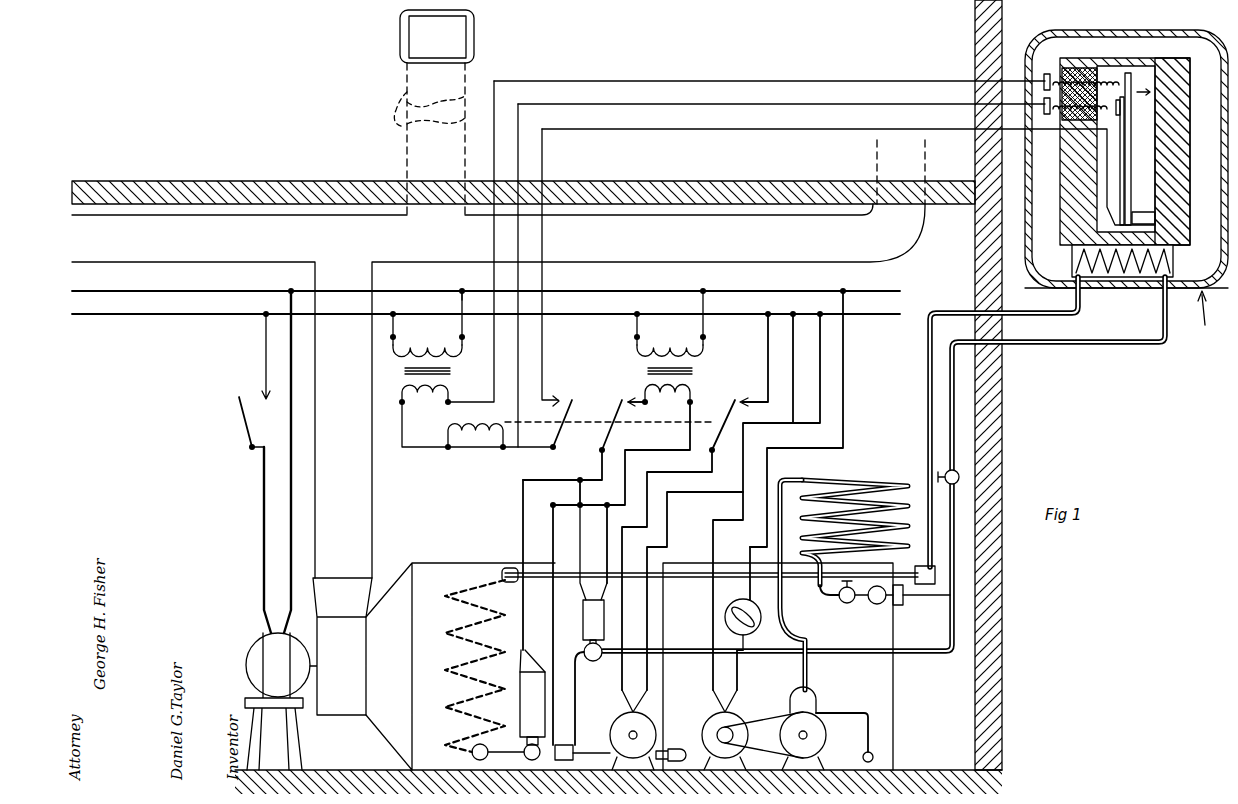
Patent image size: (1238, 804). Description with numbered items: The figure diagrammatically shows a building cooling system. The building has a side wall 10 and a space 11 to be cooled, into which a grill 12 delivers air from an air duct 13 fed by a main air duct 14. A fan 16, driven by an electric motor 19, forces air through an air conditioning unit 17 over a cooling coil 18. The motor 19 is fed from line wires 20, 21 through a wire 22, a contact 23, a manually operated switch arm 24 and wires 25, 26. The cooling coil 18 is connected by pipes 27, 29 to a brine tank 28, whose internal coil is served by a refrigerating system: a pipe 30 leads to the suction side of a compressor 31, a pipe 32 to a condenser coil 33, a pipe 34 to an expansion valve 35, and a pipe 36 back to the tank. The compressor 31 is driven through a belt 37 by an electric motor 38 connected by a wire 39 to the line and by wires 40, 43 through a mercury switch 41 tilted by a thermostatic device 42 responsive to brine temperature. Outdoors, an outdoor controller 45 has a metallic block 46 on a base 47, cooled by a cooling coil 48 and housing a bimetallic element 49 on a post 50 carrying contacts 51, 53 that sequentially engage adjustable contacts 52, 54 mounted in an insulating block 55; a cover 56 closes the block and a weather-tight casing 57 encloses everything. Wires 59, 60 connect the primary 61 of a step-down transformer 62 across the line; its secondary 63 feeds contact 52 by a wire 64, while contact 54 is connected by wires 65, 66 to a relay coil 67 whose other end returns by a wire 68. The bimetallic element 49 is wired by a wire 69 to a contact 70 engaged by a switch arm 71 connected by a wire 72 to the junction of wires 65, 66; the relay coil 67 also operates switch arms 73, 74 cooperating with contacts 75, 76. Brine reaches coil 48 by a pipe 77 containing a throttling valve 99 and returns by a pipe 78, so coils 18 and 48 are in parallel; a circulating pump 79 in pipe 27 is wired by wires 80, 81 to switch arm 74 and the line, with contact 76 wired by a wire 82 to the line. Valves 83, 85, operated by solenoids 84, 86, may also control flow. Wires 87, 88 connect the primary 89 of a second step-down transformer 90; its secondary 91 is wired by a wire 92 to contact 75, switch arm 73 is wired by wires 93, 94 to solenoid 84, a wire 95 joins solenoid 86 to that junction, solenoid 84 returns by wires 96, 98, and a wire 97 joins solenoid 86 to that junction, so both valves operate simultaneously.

The side wall 10 is at (990, 426).
The space to be cooled 11 is at (297, 115).
The grill 12 is at (473, 38).
The air duct 13 is at (406, 126).
The main air duct 14 is at (400, 262).
The fan 16 is at (340, 703).
The air conditioning unit 17 is at (418, 567).
The cooling coil 18 is at (468, 578).
The electric motor 19 is at (252, 655).
The line wire 20 is at (150, 314).
The line wire 21 is at (150, 291).
The wire 22 is at (264, 372).
The contact 23 is at (264, 400).
The switch arm 24 is at (242, 418).
The wire 25 is at (262, 606).
The wire 26 is at (292, 600).
The pipe 27 is at (572, 745).
The brine tank 28 is at (895, 700).
The pipe 29 is at (670, 580).
The pipe 30 is at (850, 713).
The compressor 31 is at (795, 698).
The pipe 32 is at (808, 672).
The condenser coil 33 is at (858, 482).
The pipe 34 is at (817, 585).
The expansion valve 35 is at (846, 603).
The pipe 36 is at (879, 604).
The belt 37 is at (773, 725).
The electric motor 38 is at (708, 726).
The wire 39 is at (712, 553).
The wire 40 is at (737, 684).
The mercury switch 41 is at (741, 636).
The thermostatic device 42 is at (740, 604).
The wire 43 is at (844, 403).
The outdoor controller 45 is at (1202, 316).
The metallic block 46 is at (1178, 152).
The base 47 is at (1142, 289).
The cooling coil 48 is at (1103, 278).
The bimetallic element 49 is at (1126, 175).
The post 50 is at (1150, 218).
The contact 51 is at (1124, 75).
The adjustable contact 52 is at (1048, 78).
The contact 53 is at (1121, 112).
The adjustable contact 54 is at (1049, 110).
The insulating block 55 is at (1078, 70).
The cover 56 is at (1158, 62).
The weather-tight casing 57 is at (1136, 32).
The wire 59 is at (394, 330).
The wire 60 is at (460, 300).
The primary 61 is at (434, 350).
The step-down transformer 62 is at (396, 377).
The secondary 63 is at (403, 400).
The wire 64 is at (492, 360).
The wire 65 is at (518, 360).
The wire 66 is at (503, 451).
The relay coil 67 is at (478, 440).
The wire 68 is at (402, 440).
The wire 69 is at (542, 356).
The contact 70 is at (559, 400).
The switch arm 71 is at (561, 428).
The wire 72 is at (552, 450).
The switch arm 73 is at (612, 425).
The switch arm 74 is at (722, 428).
The contact 75 is at (628, 401).
The contact 76 is at (738, 398).
The pipe 77 is at (1066, 345).
The pipe 78 is at (925, 398).
The circulating pump 79 is at (616, 726).
The wire 80 is at (660, 472).
The wire 81 is at (668, 495).
The wire 82 is at (768, 370).
The valve 83 is at (472, 752).
The solenoid 84 is at (527, 660).
The valve 85 is at (591, 658).
The solenoid 86 is at (583, 632).
The wire 87 is at (636, 330).
The wire 88 is at (704, 330).
The primary 89 is at (668, 346).
The step-down transformer 90 is at (636, 378).
The secondary 91 is at (660, 393).
The wire 92 is at (647, 405).
The wire 93 is at (601, 480).
The wire 94 is at (522, 528).
The wire 95 is at (555, 555).
The wire 96 is at (550, 505).
The wire 97 is at (605, 542).
The wire 98 is at (660, 450).
The throttling valve 99 is at (950, 483).